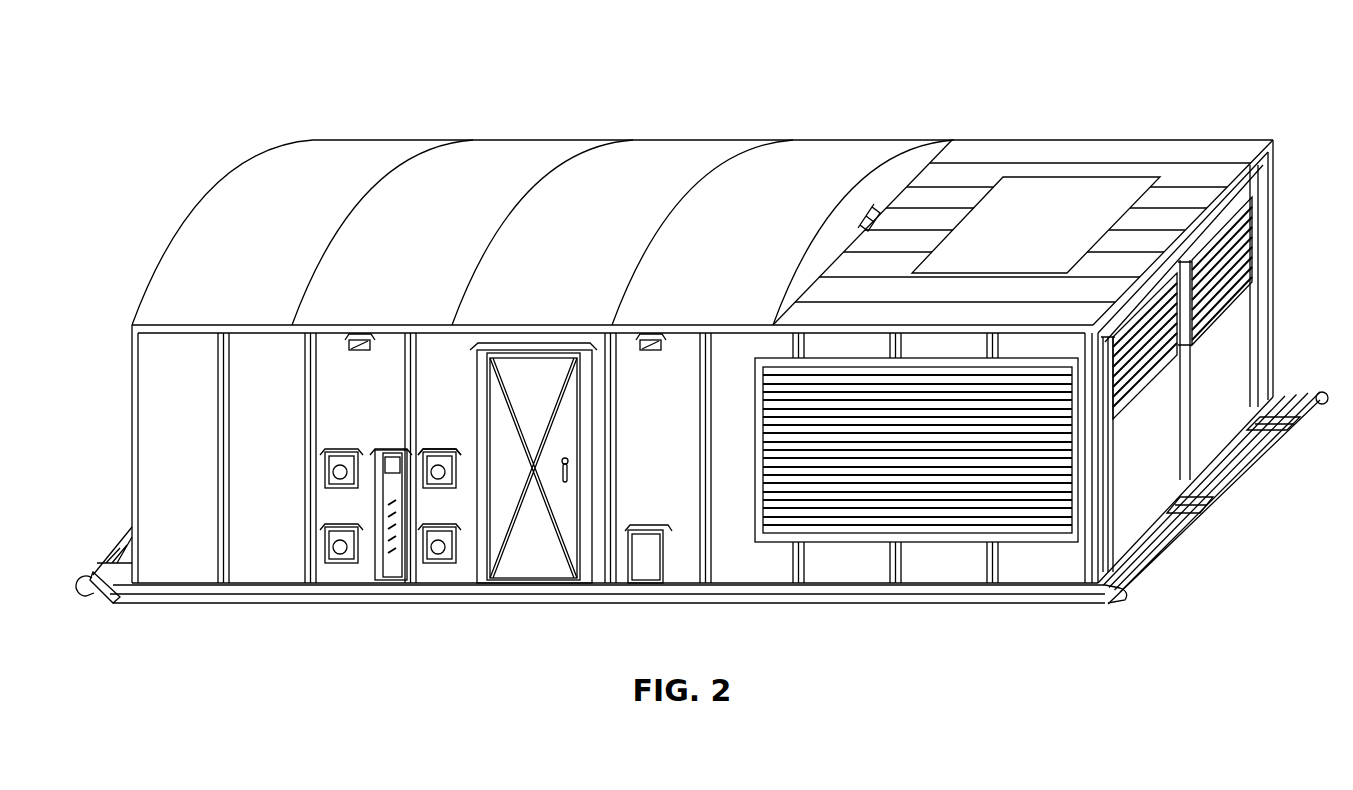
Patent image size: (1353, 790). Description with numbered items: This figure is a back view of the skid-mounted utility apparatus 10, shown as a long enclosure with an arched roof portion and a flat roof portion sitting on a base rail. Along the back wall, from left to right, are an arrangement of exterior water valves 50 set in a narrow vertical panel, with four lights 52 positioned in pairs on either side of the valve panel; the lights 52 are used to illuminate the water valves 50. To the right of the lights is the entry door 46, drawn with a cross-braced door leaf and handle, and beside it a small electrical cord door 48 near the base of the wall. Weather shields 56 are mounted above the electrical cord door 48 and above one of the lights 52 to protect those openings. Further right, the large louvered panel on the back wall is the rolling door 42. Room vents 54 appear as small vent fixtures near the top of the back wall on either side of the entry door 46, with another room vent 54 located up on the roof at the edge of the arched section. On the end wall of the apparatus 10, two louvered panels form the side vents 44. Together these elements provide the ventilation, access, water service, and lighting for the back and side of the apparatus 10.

The utility apparatus 10 is at (144, 125).
The rolling door 42 is at (985, 523).
The side vents 44 is at (1250, 222).
The entry door 46 is at (540, 372).
The electrical cord door 48 is at (648, 563).
The exterior water valves 50 is at (383, 533).
The lights 52 is at (341, 456).
The room vents 54 is at (358, 338).
The weather shields 56 is at (445, 452).